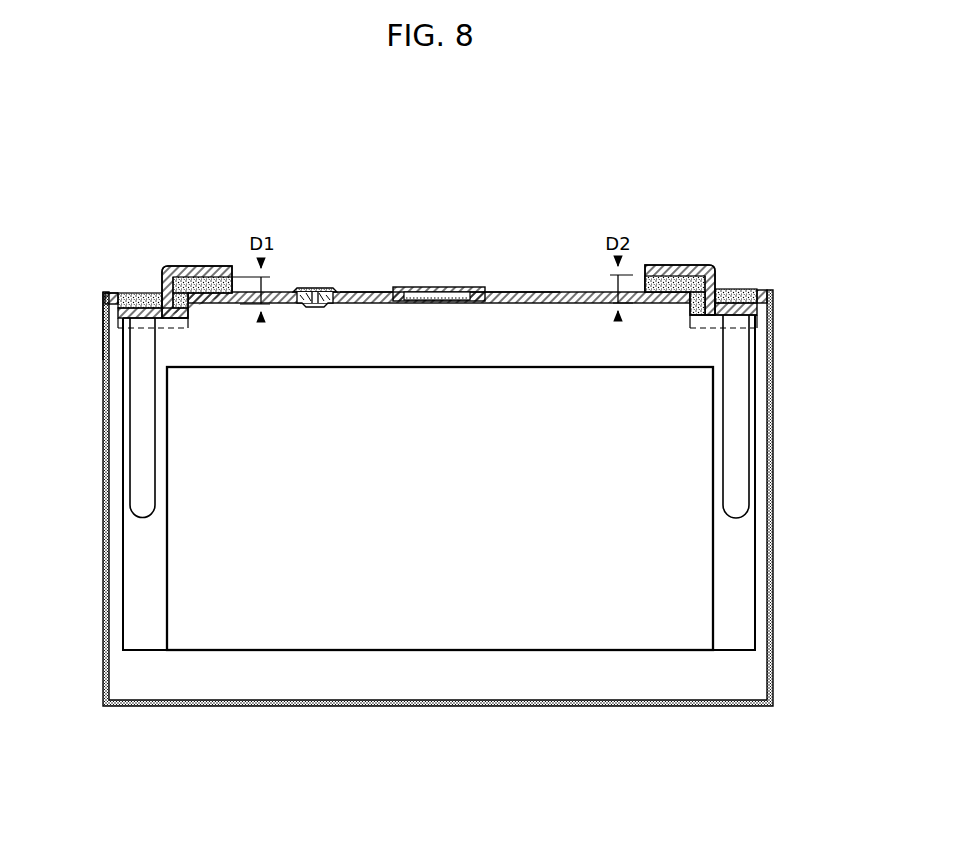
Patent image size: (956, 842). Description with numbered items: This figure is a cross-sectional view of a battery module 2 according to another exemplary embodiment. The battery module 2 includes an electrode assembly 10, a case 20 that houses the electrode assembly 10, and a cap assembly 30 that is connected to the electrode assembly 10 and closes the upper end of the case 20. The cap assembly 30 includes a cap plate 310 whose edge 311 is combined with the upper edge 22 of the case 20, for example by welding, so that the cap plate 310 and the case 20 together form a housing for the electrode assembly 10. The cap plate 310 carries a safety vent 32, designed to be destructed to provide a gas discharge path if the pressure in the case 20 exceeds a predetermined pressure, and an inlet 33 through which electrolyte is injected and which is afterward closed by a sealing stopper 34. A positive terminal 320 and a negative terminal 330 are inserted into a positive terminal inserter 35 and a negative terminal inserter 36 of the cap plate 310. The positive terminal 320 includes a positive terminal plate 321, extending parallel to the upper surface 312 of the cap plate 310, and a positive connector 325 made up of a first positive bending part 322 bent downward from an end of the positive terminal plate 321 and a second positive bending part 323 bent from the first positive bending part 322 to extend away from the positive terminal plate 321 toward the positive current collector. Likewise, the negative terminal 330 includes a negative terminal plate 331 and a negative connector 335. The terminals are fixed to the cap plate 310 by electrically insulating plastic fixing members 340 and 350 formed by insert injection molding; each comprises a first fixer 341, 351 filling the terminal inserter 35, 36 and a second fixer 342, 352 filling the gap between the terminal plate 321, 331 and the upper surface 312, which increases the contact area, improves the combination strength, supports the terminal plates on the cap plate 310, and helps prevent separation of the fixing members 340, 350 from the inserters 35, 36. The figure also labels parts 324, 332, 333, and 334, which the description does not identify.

The battery module 2 is at (676, 175).
The electrode assembly 10 is at (652, 650).
The case 20 is at (774, 613).
The upper edge of the case 22 is at (105, 300).
The cap assembly 30 is at (544, 287).
The cap plate 310 is at (497, 292).
The edge of the cap plate 311 is at (105, 291).
The upper surface of the cap plate 312 is at (369, 292).
The safety vent 32 is at (427, 292).
The inlet 33 is at (312, 307).
The sealing stopper 34 is at (316, 289).
The positive terminal inserter 35 is at (118, 294).
The negative terminal inserter 36 is at (767, 291).
The positive terminal 320 is at (182, 263).
The positive terminal plate 321 is at (205, 265).
The first positive bending part 322 is at (183, 310).
The second positive bending part 323 is at (145, 318).
The first current collector tab 324 is at (135, 468).
The positive connector 325 is at (275, 398).
The negative terminal 330 is at (691, 261).
The negative terminal plate 331 is at (665, 270).
The second terminal pillar insulation 332 is at (690, 325).
The second current collecting plate 333 is at (736, 318).
The second current collector tab 334 is at (745, 468).
The negative connector 335 is at (616, 397).
The positive fixing member 340 is at (108, 192).
The first fixer 341 is at (127, 294).
The second fixer 342 is at (145, 298).
The negative fixing member 350 is at (763, 204).
The first fixer 351 is at (742, 289).
The second fixer 352 is at (726, 290).